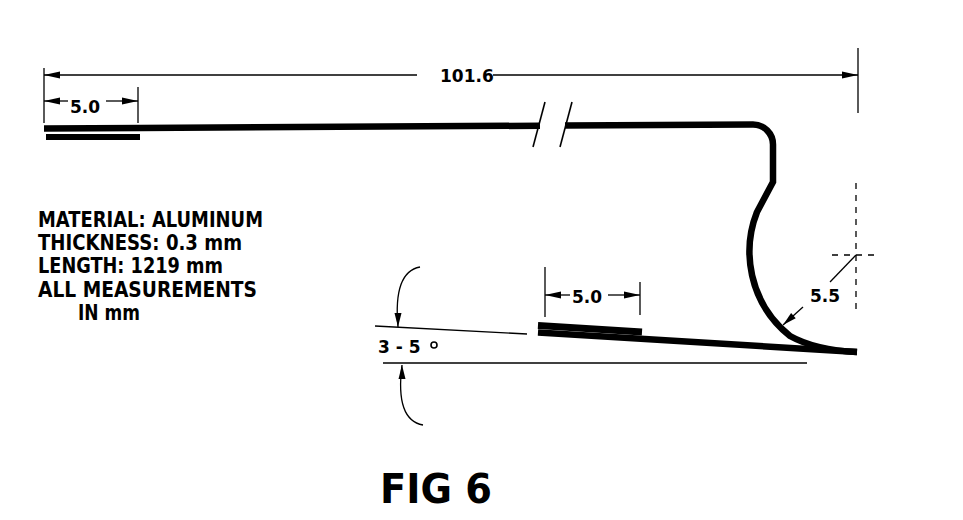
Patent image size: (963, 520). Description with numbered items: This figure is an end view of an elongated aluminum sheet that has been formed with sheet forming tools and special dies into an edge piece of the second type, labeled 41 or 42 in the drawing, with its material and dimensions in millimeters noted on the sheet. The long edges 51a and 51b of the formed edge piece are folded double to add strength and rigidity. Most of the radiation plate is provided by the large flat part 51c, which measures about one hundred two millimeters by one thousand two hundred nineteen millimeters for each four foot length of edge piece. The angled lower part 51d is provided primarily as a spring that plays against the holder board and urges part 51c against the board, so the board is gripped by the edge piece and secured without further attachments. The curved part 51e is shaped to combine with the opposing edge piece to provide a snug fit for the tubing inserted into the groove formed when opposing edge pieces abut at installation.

The reflector strip 41 is at (643, 65).
The reflector strip 42 is at (450, 227).
The folded long edge 51a is at (72, 140).
The folded long edge 51b is at (535, 325).
The radiation plate part 51c is at (408, 130).
The spring part 51d is at (740, 342).
The curved tubing-fitting part 51e is at (780, 247).